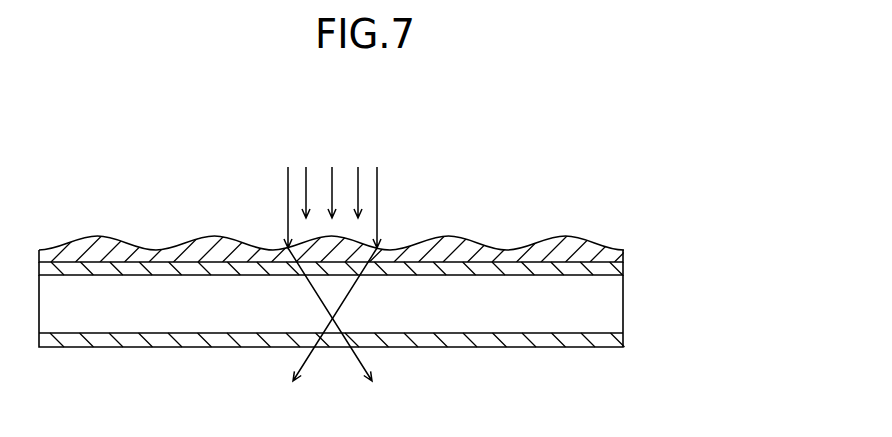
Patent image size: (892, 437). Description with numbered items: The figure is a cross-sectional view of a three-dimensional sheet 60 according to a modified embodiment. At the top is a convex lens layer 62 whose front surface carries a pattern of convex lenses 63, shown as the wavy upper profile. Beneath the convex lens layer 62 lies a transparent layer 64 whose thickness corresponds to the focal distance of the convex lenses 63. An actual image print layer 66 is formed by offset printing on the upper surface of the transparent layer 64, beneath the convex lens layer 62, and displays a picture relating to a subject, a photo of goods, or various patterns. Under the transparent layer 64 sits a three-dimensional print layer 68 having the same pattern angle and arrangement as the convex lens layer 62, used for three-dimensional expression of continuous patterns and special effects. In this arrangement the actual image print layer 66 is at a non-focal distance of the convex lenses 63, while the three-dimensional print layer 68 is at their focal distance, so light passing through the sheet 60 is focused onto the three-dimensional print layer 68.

The 3D sheet 60 is at (388, 286).
The convex lens layer 62 is at (617, 268).
The convex lens 63 is at (618, 257).
The transparent layer 64 is at (615, 308).
The actual image print layer 66 is at (573, 236).
The 3D print layer 68 is at (365, 347).